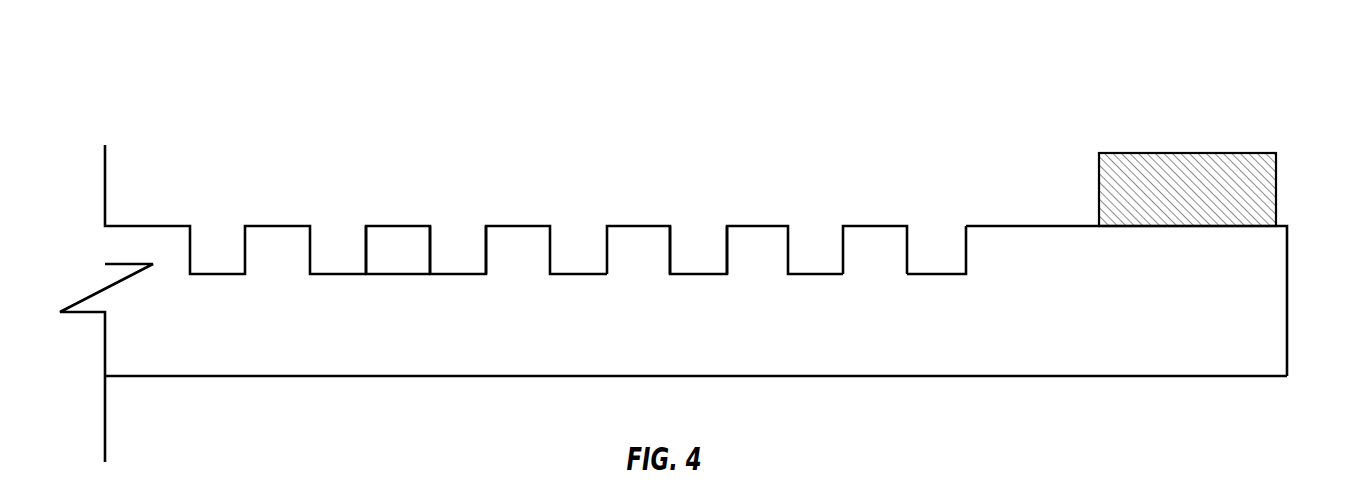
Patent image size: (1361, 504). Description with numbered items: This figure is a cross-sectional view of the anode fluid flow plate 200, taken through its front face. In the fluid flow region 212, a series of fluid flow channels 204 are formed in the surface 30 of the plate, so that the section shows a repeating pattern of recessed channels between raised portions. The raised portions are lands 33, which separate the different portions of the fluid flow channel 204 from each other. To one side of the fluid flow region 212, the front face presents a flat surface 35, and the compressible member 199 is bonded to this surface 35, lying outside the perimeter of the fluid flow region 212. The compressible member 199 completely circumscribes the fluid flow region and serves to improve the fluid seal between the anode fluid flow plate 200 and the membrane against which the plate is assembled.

The anode fluid flow plate 200 is at (865, 43).
The fluid flow region 212 is at (347, 213).
The lands 33 is at (375, 240).
The fluid flow channels 204 is at (450, 255).
The surface 30 is at (657, 225).
The surface 35 is at (1278, 223).
The compressible member 199 is at (1195, 165).